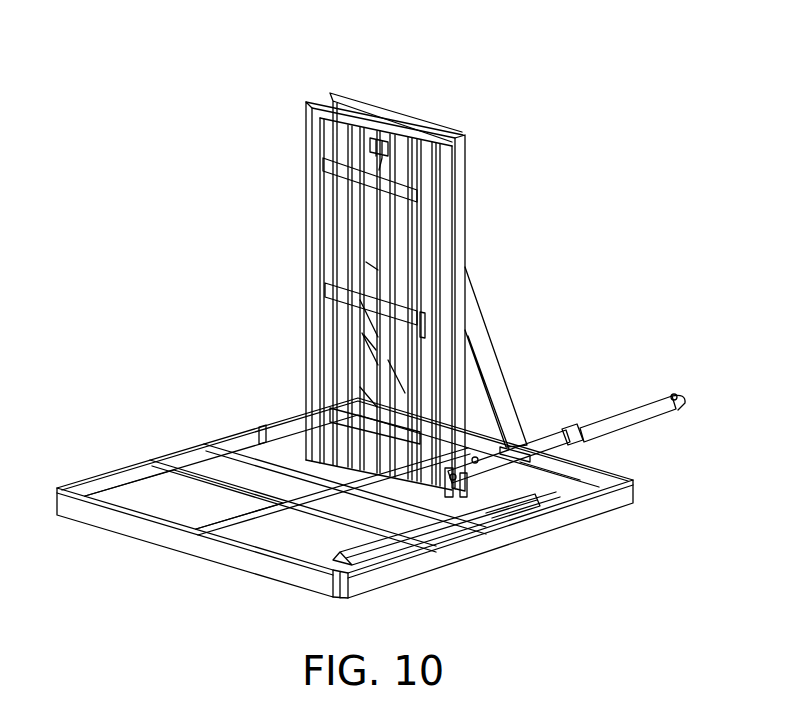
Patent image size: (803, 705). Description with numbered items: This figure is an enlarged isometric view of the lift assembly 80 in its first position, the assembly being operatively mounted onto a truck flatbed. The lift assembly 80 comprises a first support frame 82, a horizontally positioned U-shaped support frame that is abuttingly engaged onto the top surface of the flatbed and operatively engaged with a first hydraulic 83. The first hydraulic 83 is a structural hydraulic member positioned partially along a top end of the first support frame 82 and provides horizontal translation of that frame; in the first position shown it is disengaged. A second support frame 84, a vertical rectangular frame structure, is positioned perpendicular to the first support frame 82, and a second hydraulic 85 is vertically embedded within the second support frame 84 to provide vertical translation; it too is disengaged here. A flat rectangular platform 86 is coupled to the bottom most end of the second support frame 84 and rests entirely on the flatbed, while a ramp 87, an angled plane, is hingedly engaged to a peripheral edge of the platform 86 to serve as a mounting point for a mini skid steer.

The lift assembly 80 is at (300, 96).
The first support frame 82 is at (558, 532).
The first hydraulic 83 is at (622, 417).
The second support frame 84 is at (453, 185).
The second hydraulic 85 is at (378, 237).
The platform 86 is at (168, 488).
The ramp 87 is at (455, 522).